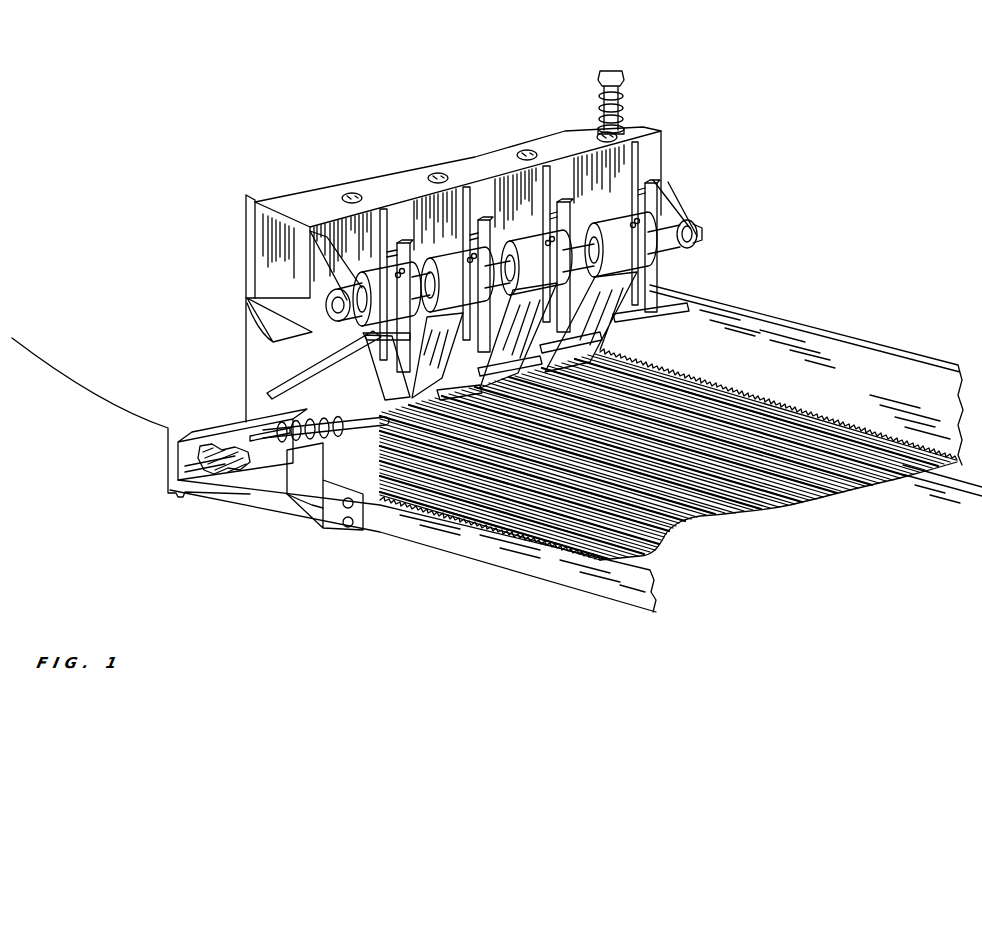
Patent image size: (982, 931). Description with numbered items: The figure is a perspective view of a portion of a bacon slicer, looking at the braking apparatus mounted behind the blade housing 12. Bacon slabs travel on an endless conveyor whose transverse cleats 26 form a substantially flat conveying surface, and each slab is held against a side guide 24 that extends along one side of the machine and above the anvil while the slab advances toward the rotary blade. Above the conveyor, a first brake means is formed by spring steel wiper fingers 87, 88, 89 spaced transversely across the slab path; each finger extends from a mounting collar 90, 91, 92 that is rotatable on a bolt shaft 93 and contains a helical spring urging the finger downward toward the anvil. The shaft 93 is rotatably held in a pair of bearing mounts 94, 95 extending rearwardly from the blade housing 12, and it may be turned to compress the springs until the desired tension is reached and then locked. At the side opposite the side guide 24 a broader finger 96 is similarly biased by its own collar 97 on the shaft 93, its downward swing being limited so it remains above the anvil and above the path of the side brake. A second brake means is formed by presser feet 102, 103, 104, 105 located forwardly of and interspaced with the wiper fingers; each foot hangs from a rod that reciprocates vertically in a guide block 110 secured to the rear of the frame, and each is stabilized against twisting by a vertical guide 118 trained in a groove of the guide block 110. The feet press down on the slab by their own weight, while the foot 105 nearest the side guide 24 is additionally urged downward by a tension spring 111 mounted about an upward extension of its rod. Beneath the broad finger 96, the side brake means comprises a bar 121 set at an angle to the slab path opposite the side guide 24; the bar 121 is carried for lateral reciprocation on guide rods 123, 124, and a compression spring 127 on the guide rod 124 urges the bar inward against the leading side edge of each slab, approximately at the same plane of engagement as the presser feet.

The blade housing 12 is at (102, 403).
The side guide 24 is at (898, 380).
The transverse cleats 26 is at (555, 548).
The wiper finger 87 is at (460, 321).
The wiper finger 88 is at (541, 302).
The wiper finger 89 is at (628, 285).
The mounting collar 90 is at (472, 288).
The mounting collar 91 is at (554, 269).
The mounting collar 92 is at (640, 249).
The bolt shaft 93 is at (670, 222).
The bearing mount 94 is at (323, 223).
The bearing mount 95 is at (697, 228).
The broad finger 96 is at (320, 358).
The collar 97 is at (402, 305).
The presser foot 102 is at (425, 383).
The presser foot 103 is at (506, 367).
The presser foot 104 is at (587, 350).
The presser foot 105 is at (667, 313).
The guide block 110 is at (476, 158).
The tension spring 111 is at (625, 100).
The vertical guide 118 is at (660, 277).
The bar 121 is at (422, 463).
The guide rod 123 is at (287, 493).
The guide rod 124 is at (277, 435).
The compression spring 127 is at (290, 420).